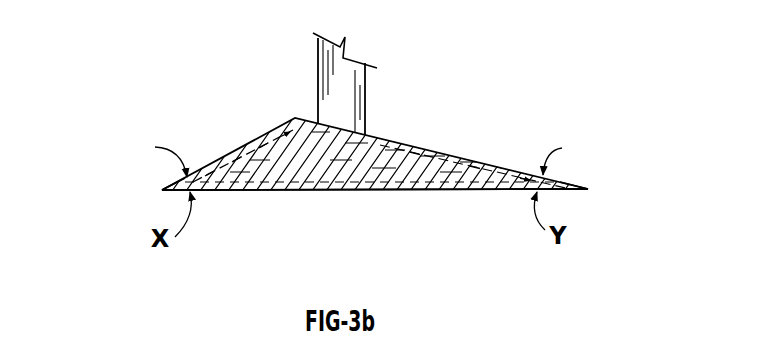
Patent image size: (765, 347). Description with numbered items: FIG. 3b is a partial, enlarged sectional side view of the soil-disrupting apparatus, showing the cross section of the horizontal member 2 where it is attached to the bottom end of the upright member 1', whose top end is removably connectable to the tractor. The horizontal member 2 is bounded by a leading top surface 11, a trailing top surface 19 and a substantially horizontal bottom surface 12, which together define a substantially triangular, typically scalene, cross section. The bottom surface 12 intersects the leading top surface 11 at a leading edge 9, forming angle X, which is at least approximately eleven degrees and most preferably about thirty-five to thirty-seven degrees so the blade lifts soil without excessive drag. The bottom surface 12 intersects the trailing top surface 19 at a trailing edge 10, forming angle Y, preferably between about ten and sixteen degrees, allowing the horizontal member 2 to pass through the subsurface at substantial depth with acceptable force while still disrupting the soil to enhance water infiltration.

The horizontal member 2 is at (425, 157).
The leading edge 9 is at (162, 190).
The trailing edge 10 is at (588, 189).
The leading top surface 11 is at (258, 138).
The bottom surface 12 is at (297, 190).
The trailing top surface 19 is at (488, 165).
The upright member 1' is at (381, 84).